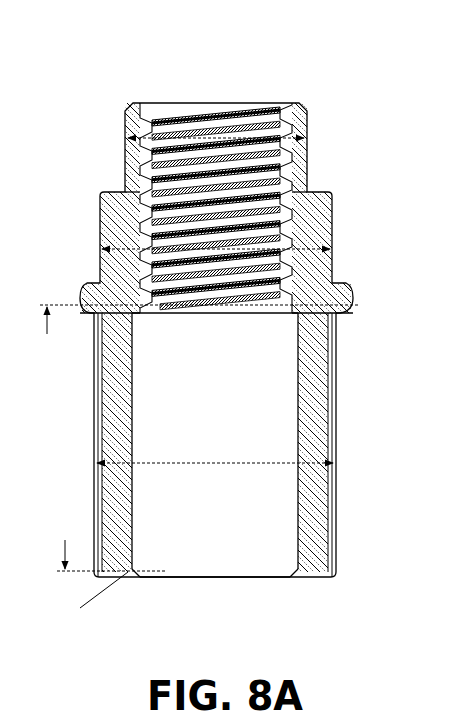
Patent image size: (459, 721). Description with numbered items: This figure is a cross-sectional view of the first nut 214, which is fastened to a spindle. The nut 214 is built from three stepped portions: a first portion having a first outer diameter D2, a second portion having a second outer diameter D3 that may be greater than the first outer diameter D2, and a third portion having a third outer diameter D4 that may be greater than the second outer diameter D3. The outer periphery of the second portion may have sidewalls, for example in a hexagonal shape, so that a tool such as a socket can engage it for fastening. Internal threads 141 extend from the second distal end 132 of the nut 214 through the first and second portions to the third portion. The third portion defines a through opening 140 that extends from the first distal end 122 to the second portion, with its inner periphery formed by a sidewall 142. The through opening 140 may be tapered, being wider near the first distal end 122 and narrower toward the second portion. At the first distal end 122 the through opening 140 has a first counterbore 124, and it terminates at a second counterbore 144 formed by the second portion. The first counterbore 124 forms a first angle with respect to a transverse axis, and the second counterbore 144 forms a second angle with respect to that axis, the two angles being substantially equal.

The first nut 214 is at (155, 68).
The second distal end 132 is at (257, 103).
The internal threads 141 is at (141, 172).
The second counterbore 144 is at (133, 316).
The through opening 140 is at (228, 443).
The sidewall 142 is at (128, 515).
The first counterbore 124 is at (125, 579).
The first distal end 122 is at (228, 579).
The first outer diameter D2 is at (277, 123).
The second outer diameter D3 is at (300, 249).
The third outer diameter D4 is at (280, 463).